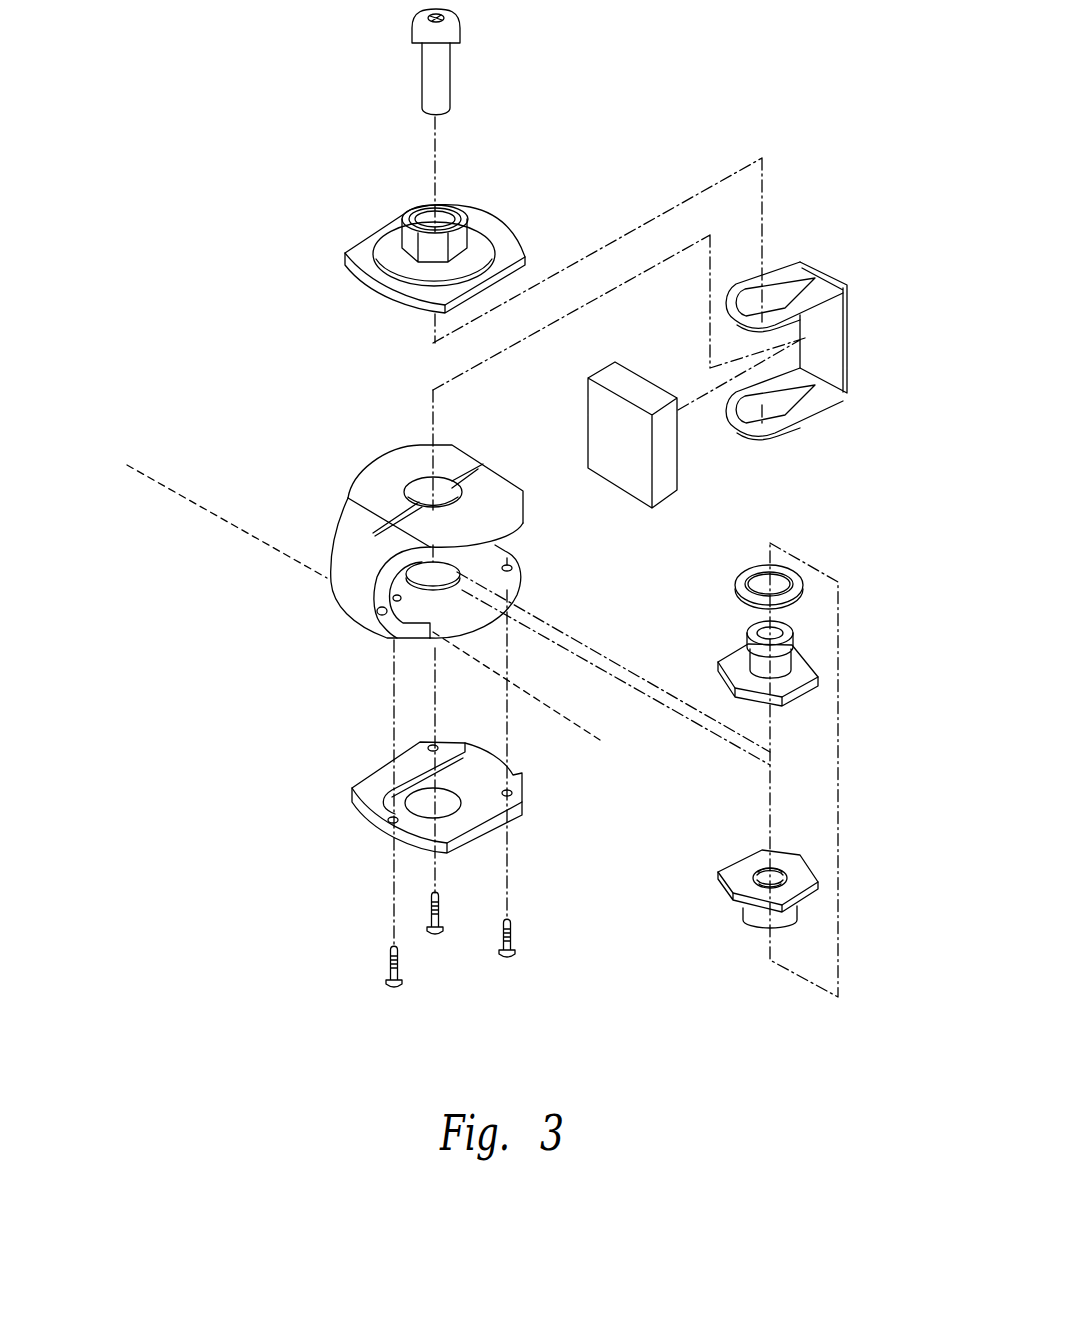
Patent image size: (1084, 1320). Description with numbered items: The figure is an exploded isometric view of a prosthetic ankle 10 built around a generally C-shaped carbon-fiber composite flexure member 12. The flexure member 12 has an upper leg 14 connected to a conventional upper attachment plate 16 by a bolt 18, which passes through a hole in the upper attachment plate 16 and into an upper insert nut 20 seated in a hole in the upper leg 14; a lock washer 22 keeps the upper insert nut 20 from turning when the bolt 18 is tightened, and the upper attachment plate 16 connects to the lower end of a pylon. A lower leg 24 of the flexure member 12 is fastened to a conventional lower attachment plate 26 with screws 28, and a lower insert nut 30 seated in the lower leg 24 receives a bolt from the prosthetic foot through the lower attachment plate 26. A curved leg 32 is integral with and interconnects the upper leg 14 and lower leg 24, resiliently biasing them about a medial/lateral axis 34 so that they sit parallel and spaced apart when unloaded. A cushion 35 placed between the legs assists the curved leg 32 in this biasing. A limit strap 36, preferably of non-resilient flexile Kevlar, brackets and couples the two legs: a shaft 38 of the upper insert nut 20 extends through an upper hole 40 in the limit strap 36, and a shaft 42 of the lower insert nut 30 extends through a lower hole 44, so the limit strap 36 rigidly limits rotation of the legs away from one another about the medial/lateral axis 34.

The prosthetic ankle 10 is at (247, 200).
The flexure member 12 is at (326, 515).
The upper leg 14 is at (384, 482).
The upper attachment plate 16 is at (362, 253).
The bolt 18 is at (448, 77).
The upper insert nut 20 is at (735, 650).
The lock washer 22 is at (753, 568).
The lower leg 24 is at (520, 583).
The lower attachment plate 26 is at (367, 799).
The screws 28 is at (440, 932).
The lower insert nut 30 is at (741, 879).
The curved leg 32 is at (355, 615).
The medial/lateral axis 34 is at (160, 483).
The cushion 35 is at (602, 435).
The limit strap 36 is at (823, 309).
The shaft 38 is at (755, 657).
The upper hole 40 is at (777, 292).
The shaft 42 is at (755, 917).
The lower hole 44 is at (787, 407).